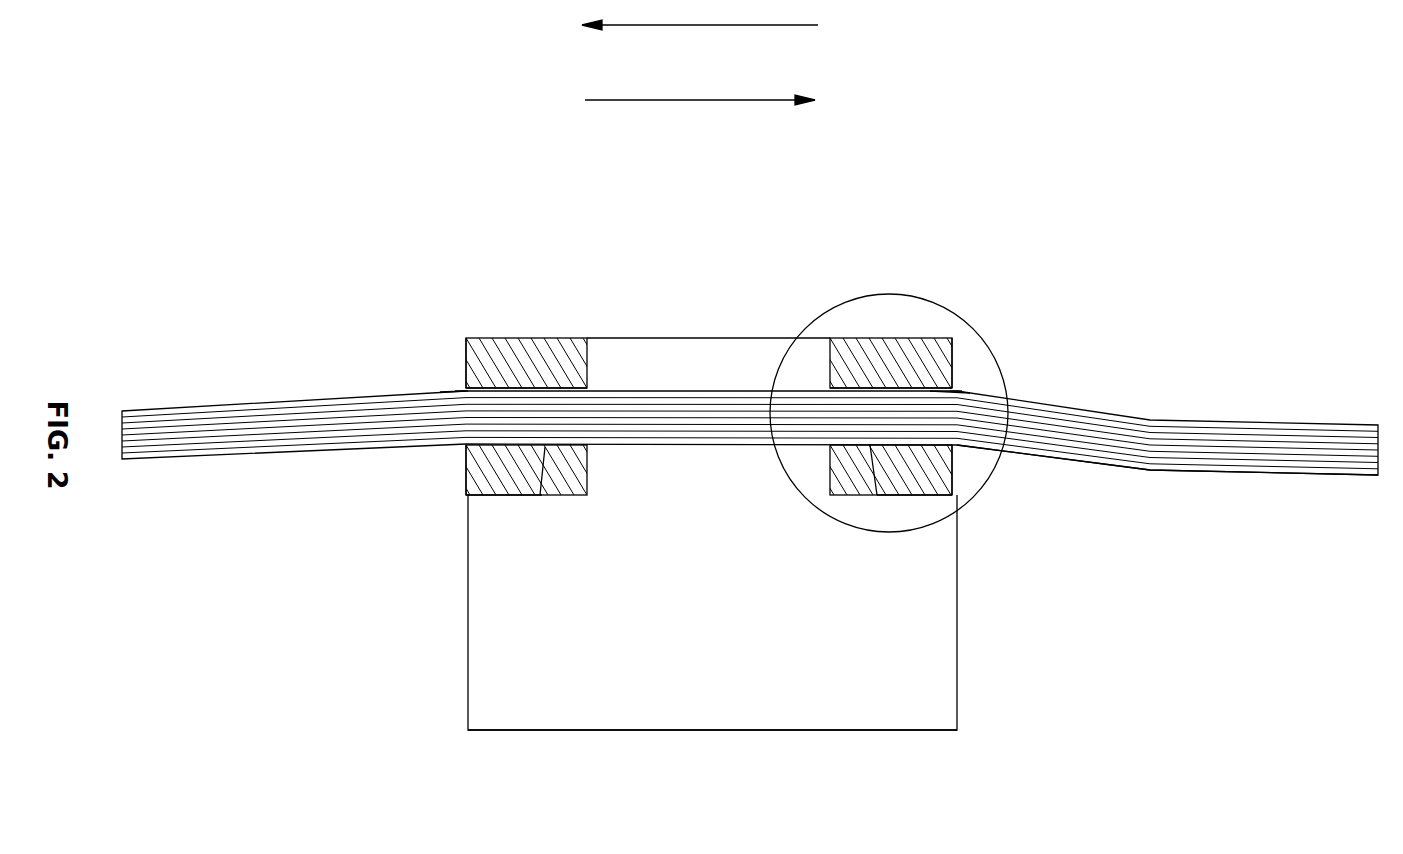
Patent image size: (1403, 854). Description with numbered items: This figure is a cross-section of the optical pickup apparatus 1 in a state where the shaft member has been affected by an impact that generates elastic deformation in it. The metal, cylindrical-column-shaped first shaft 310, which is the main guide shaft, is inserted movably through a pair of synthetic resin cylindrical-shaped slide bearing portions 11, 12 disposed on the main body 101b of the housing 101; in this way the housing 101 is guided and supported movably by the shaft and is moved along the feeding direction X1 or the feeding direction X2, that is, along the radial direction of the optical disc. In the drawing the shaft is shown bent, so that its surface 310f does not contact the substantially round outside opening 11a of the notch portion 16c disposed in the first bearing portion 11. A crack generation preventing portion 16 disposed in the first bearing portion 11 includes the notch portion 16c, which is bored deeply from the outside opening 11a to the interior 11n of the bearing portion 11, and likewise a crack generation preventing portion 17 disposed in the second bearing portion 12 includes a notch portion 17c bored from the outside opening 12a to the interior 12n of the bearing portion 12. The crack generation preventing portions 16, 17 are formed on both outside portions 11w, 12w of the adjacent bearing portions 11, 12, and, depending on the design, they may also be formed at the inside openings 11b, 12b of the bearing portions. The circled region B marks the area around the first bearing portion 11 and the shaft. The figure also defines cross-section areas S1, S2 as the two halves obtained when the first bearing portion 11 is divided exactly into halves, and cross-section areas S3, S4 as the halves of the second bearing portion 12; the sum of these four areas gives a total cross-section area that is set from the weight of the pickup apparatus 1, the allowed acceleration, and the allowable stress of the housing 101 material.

The optical pickup apparatus 1 is at (1232, 180).
The housing 101 is at (697, 332).
The main body 101b is at (740, 690).
The first bearing portion 11 is at (885, 328).
The outside portion 11w is at (957, 350).
The outside opening 11a is at (953, 447).
The interior 11n is at (877, 498).
The inside opening 11b is at (827, 447).
The second bearing portion 12 is at (534, 334).
The outside portion 12w is at (460, 350).
The outside opening 12a is at (465, 447).
The interior 12n is at (540, 497).
The inside opening 12b is at (590, 447).
The crack generation preventing portion 16 is at (947, 380).
The notch portion 16c is at (957, 390).
The crack generation preventing portion 17 is at (463, 390).
The notch portion 17c is at (462, 388).
The first shaft 310 is at (1300, 420).
The surface 310f is at (1177, 472).
The cross-section area S1 is at (850, 340).
The cross-section area S2 is at (920, 497).
The cross-section area S3 is at (565, 353).
The cross-section area S4 is at (498, 495).
The enlarged region B is at (848, 298).
The feeding direction X1 is at (818, 25).
The feeding direction X2 is at (585, 100).